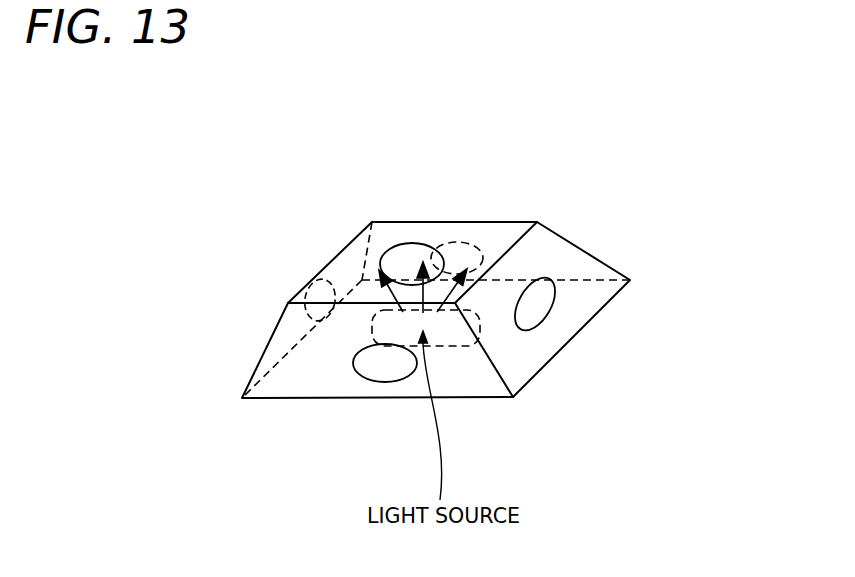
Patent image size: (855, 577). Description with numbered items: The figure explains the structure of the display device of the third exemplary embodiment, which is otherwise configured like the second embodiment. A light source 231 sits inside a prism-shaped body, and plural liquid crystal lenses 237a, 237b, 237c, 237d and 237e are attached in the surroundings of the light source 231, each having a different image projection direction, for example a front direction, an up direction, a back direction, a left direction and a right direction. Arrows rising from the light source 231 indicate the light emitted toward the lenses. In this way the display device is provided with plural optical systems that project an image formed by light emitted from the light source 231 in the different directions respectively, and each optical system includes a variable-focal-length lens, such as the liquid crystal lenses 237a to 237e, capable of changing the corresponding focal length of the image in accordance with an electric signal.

The light source 231 is at (460, 346).
The liquid crystal lens 237a is at (408, 250).
The liquid crystal lens 237b is at (544, 318).
The liquid crystal lens 237c is at (382, 383).
The liquid crystal lens 237d is at (305, 284).
The liquid crystal lens 237e is at (481, 247).